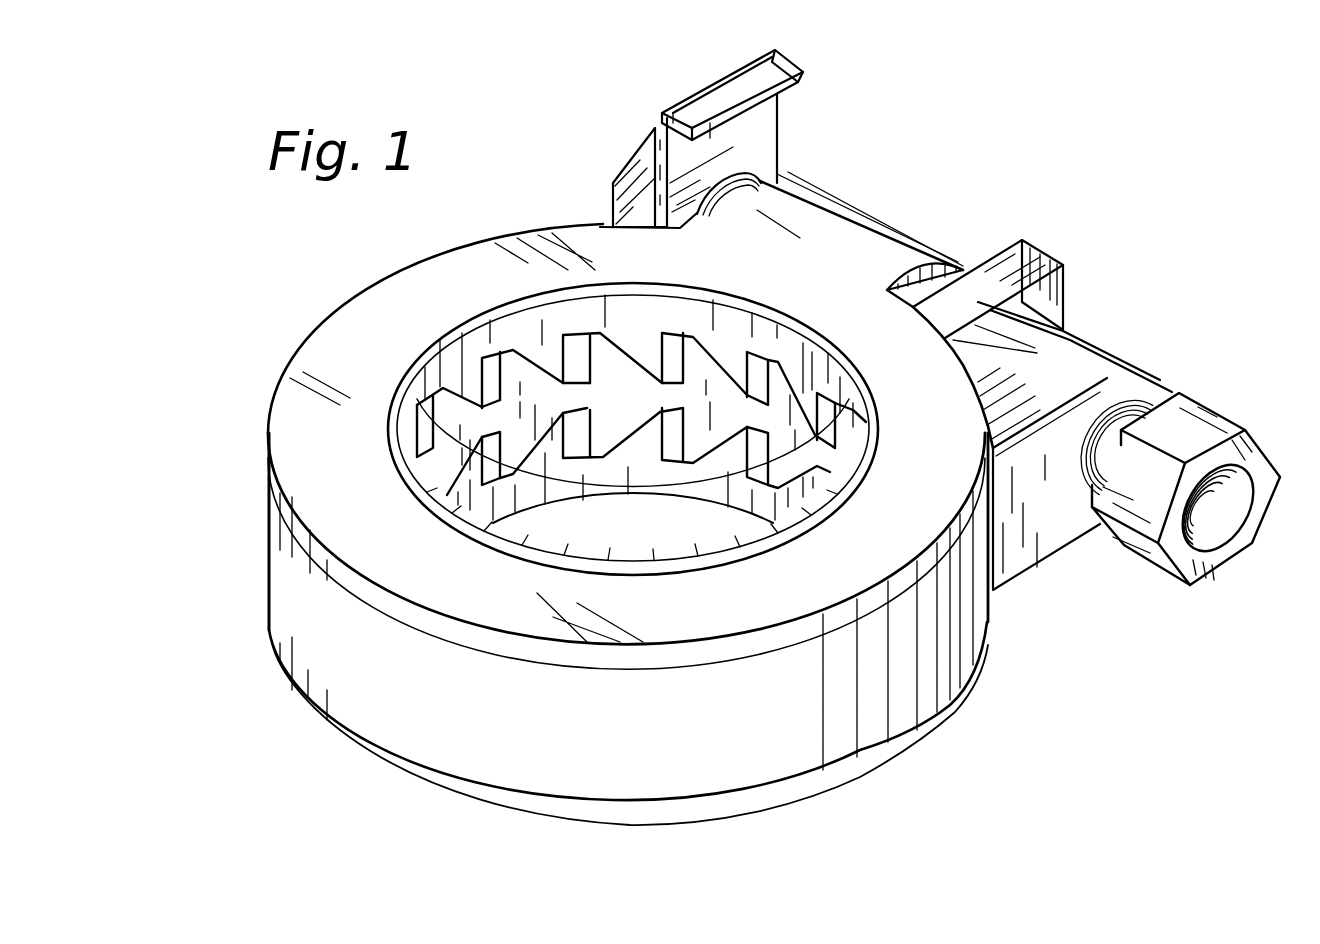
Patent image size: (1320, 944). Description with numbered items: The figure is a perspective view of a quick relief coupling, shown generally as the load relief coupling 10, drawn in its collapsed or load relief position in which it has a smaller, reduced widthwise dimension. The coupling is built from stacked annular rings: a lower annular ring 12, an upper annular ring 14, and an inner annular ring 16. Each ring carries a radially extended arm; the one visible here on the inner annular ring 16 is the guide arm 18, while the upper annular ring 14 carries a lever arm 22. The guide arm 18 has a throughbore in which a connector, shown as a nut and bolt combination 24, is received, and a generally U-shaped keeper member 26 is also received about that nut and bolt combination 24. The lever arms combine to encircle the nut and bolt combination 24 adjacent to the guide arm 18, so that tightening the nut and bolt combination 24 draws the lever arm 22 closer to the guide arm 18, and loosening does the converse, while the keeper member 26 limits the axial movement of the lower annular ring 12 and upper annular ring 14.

The load relief coupling 10 is at (238, 321).
The lower annular ring 12 is at (503, 797).
The upper annular ring 14 is at (297, 467).
The inner annular ring 16 is at (303, 605).
The guide arm 18 is at (1067, 357).
The lever arm 22 is at (840, 240).
The nut and bolt combination 24 is at (1222, 427).
The keeper member 26 is at (787, 62).